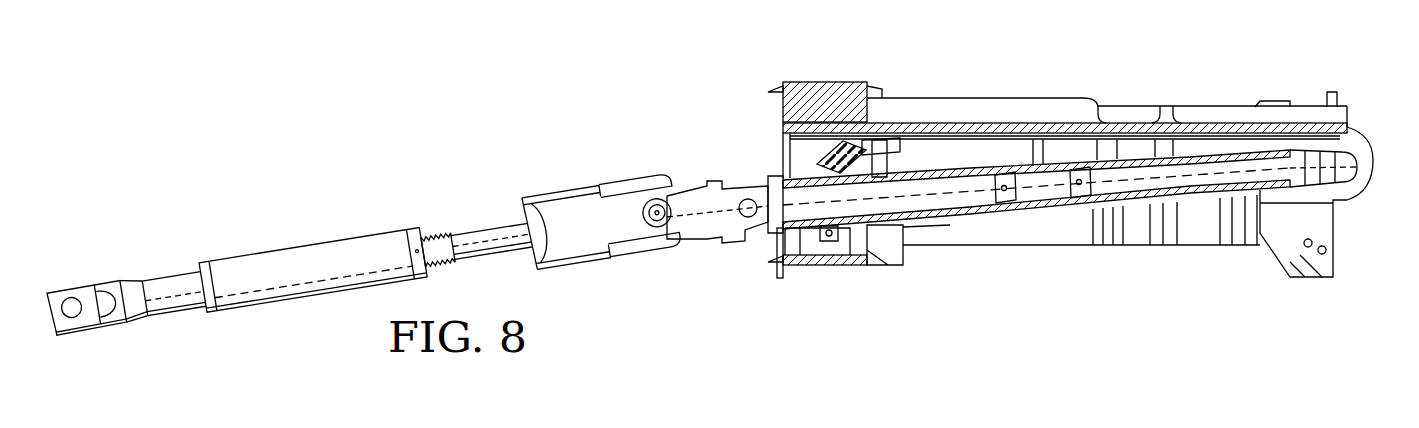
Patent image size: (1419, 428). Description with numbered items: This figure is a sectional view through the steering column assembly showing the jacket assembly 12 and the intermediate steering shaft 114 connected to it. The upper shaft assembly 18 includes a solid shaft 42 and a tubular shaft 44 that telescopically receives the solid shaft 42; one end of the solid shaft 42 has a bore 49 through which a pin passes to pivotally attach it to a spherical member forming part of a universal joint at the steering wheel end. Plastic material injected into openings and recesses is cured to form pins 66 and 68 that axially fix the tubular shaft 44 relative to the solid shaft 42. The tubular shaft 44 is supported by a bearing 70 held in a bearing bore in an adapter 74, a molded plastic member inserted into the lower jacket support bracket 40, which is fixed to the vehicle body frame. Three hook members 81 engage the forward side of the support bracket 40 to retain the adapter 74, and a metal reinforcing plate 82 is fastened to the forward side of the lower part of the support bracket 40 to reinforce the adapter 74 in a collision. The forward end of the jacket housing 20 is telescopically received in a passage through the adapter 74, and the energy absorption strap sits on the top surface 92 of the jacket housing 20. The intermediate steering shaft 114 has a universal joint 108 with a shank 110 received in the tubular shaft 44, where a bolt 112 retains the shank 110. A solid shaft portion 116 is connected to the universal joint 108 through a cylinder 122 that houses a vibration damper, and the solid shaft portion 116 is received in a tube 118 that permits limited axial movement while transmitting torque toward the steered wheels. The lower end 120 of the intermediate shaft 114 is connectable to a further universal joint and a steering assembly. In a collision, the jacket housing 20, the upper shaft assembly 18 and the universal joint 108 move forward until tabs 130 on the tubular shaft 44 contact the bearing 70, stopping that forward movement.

The jacket assembly 12 is at (1232, 245).
The upper shaft assembly 18 is at (1040, 209).
The jacket housing 20 is at (1287, 104).
The lower jacket support bracket 40 is at (805, 263).
The solid shaft 42 is at (1193, 135).
The tubular shaft 44 is at (948, 214).
The bore 49 is at (1342, 150).
The pin 66 is at (1079, 199).
The pin 68 is at (1004, 205).
The bearing 70 is at (832, 240).
The adapter 74 is at (888, 262).
The hook member 81 is at (775, 86).
The metal reinforcing plate 82 is at (777, 258).
The top surface 92 is at (982, 122).
The universal joint 108 is at (638, 180).
The shank 110 is at (730, 197).
The bolt 112 is at (748, 199).
The intermediate steering shaft 114 is at (475, 210).
The solid shaft portion 116 is at (480, 252).
The tube 118 is at (345, 250).
The lower end 120 is at (120, 318).
The cylinder 122 is at (590, 268).
The tab 130 is at (870, 165).